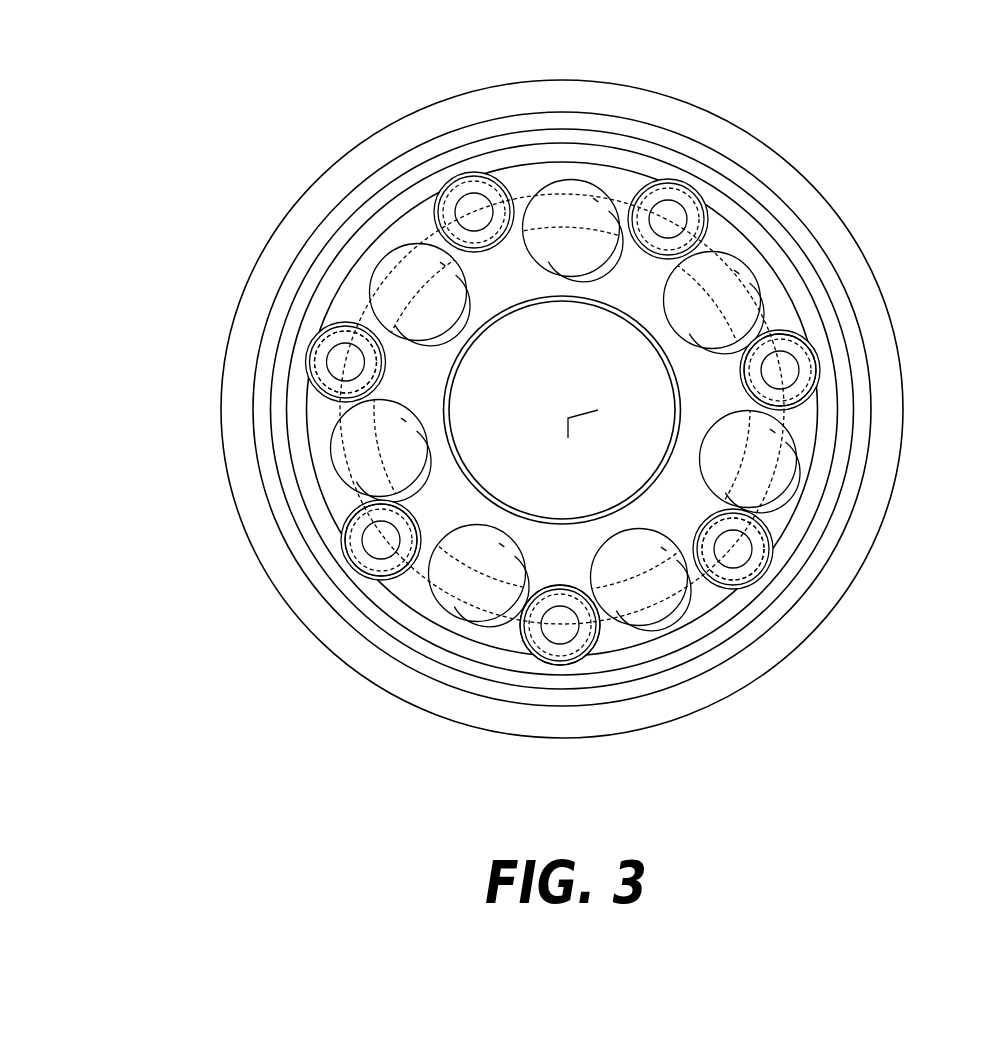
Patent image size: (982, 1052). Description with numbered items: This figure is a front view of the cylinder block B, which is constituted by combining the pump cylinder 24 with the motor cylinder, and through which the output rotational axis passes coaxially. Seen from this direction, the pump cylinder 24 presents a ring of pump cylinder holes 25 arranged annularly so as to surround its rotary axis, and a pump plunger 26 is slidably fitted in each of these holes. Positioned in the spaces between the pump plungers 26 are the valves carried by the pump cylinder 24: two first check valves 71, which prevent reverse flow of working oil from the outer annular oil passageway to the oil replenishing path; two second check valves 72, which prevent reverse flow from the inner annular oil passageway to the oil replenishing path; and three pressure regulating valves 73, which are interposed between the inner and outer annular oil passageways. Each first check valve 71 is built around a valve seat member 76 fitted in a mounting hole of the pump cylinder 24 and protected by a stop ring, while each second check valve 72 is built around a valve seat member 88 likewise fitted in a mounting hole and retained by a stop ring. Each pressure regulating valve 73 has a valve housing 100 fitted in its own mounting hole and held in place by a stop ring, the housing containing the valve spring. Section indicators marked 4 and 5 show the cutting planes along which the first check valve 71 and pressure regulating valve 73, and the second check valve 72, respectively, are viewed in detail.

The cylinder block B is at (753, 131).
The pump cylinder 24 is at (342, 180).
The pump cylinder holes 25 is at (748, 283).
The pump plungers 26 is at (711, 383).
The first check valves 71 is at (821, 364).
The second check valves 72 is at (313, 337).
The pressure regulating valves 73 is at (646, 186).
The valve seat member 76 is at (808, 343).
The valve seat member 88 is at (312, 373).
The valve housing 100 is at (584, 654).
The section line 4- 4 is at (960, 328).
The section line 5- 5 is at (220, 323).